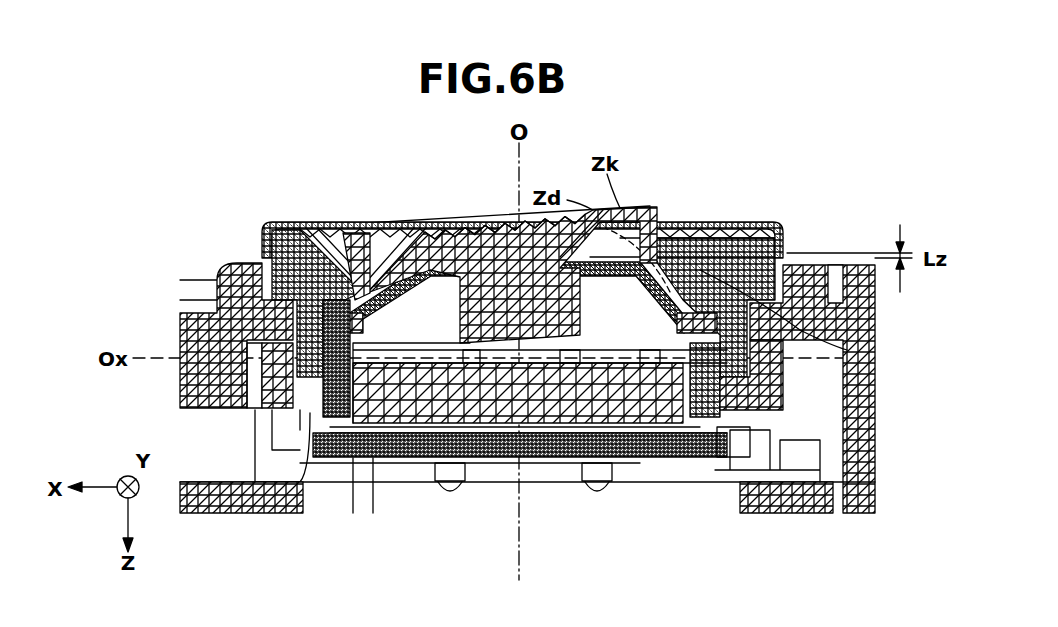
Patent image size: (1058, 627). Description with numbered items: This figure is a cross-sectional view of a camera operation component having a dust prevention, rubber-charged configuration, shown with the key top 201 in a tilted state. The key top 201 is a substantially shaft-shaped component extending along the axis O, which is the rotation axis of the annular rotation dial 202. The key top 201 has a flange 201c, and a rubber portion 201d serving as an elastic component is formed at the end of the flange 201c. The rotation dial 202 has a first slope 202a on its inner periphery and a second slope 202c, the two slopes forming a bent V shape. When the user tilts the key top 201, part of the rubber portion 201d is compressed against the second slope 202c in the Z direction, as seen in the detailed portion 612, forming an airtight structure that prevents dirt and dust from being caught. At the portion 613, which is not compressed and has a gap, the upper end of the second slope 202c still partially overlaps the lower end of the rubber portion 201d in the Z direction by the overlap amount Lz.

The key top 201 is at (473, 222).
The flange 201c is at (398, 232).
The rubber portion 201d is at (347, 268).
The rotation dial 202 is at (760, 237).
The first slope 202a is at (718, 228).
The second slope 202c is at (350, 273).
The detailed portion 612 is at (262, 233).
The portion that is not compressed 613 is at (677, 273).